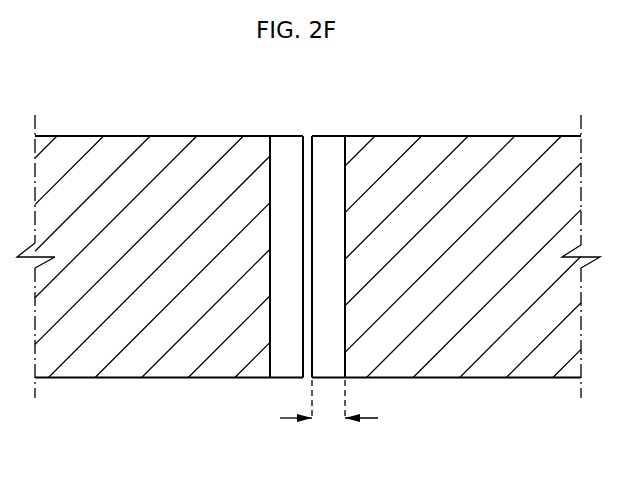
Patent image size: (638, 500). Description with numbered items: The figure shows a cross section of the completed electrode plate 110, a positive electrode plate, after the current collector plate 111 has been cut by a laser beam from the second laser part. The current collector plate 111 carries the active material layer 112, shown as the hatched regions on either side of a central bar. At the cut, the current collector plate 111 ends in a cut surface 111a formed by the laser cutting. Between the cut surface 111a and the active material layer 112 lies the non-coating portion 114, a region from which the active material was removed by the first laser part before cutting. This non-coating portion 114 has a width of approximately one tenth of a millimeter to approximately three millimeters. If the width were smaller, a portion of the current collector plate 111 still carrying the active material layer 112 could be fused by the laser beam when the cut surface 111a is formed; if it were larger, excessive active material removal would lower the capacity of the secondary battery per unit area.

The electrode plate 110 is at (517, 391).
The current collector plate 111 is at (470, 380).
The cut surface 111a is at (313, 341).
The active material layer 112 is at (167, 148).
The non-coating portion 114 is at (331, 150).